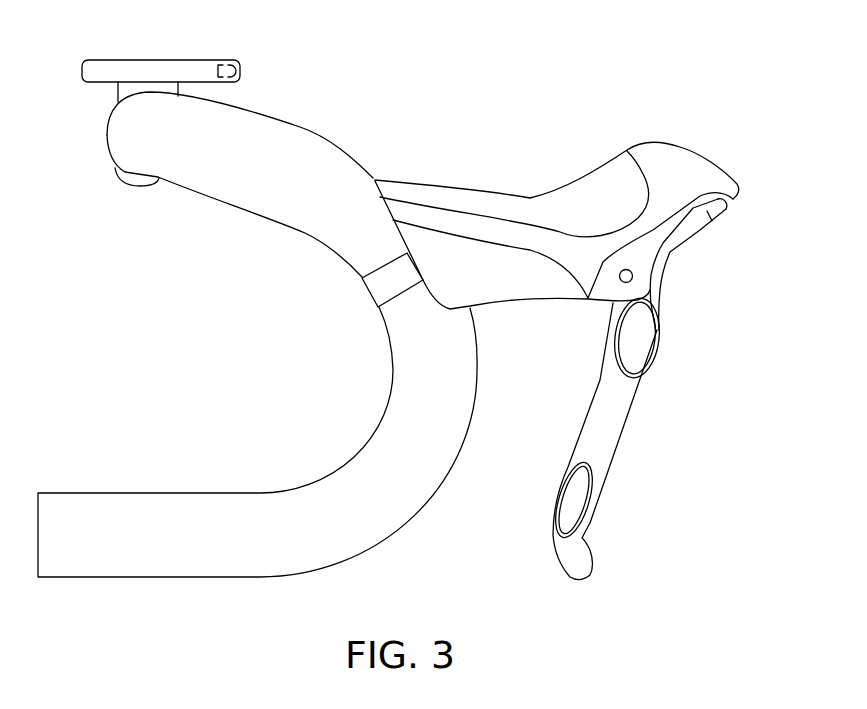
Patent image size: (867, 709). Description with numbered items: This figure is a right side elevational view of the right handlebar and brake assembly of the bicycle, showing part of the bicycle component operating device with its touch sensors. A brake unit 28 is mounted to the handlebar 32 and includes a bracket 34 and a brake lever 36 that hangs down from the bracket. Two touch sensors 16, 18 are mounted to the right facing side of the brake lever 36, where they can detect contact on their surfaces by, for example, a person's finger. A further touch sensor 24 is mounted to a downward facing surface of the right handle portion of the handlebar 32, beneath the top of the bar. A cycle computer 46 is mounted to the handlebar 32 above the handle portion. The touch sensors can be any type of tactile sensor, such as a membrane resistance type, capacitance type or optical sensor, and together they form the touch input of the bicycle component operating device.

The touch sensor 16 is at (636, 340).
The touch sensor 18 is at (573, 500).
The touch sensor 24 is at (128, 183).
The brake unit 28 is at (714, 283).
The handlebar 32 is at (318, 142).
The bracket 34 is at (707, 178).
The brake lever 36 is at (620, 437).
The cycle computer 46 is at (197, 58).